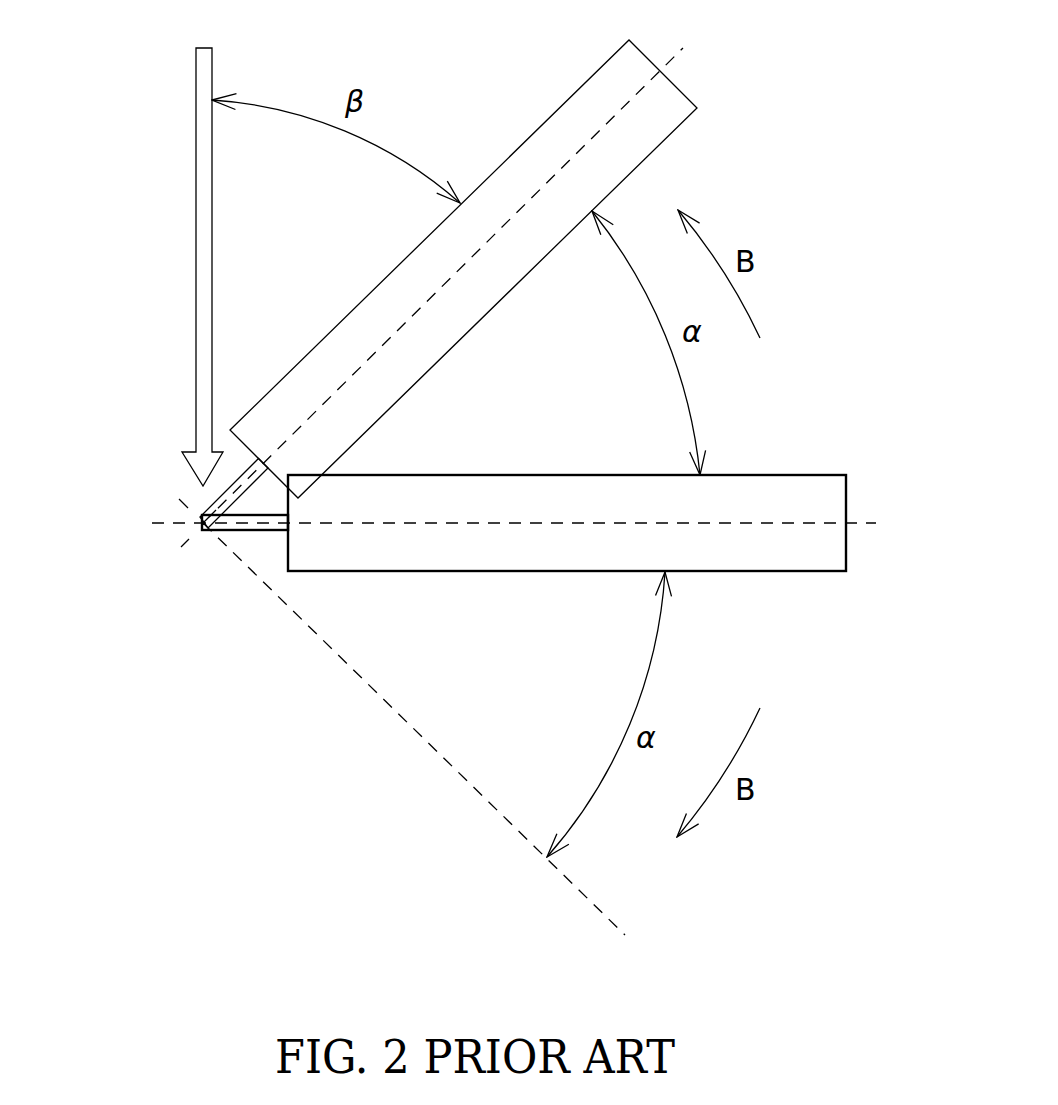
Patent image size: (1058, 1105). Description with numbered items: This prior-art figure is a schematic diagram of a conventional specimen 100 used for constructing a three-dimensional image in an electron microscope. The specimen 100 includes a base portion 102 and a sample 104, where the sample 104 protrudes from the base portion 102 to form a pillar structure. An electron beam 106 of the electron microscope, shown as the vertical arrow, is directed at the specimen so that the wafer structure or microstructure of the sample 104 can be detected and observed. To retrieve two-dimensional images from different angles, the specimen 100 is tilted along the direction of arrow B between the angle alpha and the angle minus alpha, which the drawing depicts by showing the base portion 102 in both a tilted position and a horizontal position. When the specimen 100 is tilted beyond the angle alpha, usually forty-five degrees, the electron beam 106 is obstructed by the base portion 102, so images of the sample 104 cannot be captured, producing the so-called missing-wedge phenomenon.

The specimen 100 is at (362, 272).
The base portion 102 is at (327, 353).
The sample 104 is at (258, 462).
The electron beam 106 is at (195, 313).